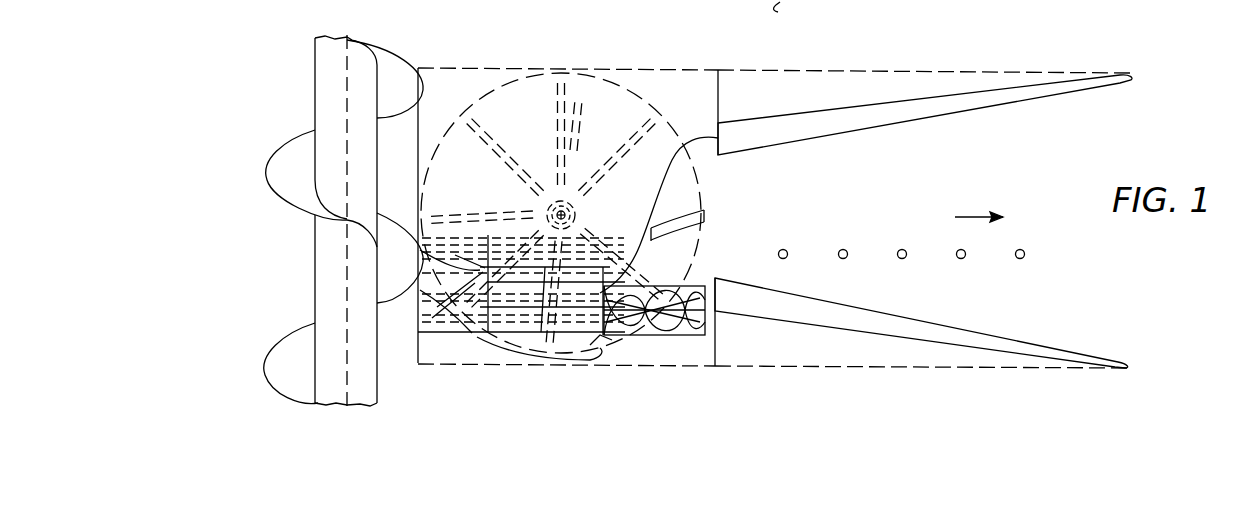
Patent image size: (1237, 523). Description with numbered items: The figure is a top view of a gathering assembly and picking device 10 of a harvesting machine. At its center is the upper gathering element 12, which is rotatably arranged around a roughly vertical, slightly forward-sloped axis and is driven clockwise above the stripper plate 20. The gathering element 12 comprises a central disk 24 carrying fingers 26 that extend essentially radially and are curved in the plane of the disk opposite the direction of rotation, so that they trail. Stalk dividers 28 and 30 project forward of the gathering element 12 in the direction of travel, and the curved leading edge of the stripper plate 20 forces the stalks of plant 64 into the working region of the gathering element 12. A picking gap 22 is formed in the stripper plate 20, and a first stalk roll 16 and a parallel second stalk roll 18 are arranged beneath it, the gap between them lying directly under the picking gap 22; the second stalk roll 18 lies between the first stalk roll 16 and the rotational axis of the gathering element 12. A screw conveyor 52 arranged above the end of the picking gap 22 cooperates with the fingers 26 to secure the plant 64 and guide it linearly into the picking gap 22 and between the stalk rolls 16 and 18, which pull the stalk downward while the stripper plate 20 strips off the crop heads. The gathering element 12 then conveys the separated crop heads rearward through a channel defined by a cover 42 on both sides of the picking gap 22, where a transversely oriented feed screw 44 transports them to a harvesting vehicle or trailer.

The gathering assembly and picking device 10 is at (908, 52).
The gathering element 12 is at (600, 164).
The first stalk roll 16 is at (600, 348).
The second stalk roll 18 is at (642, 249).
The stripper plate 20 is at (658, 172).
The picking gap 22 is at (586, 290).
The central disk 24 is at (556, 184).
The fingers 26 is at (572, 140).
The stalk divider 28 is at (945, 98).
The stalk divider 30 is at (1025, 352).
The cover 42 is at (447, 96).
The feed screw 44 is at (331, 134).
The screw conveyor 52 is at (680, 316).
The plant 64 is at (843, 250).